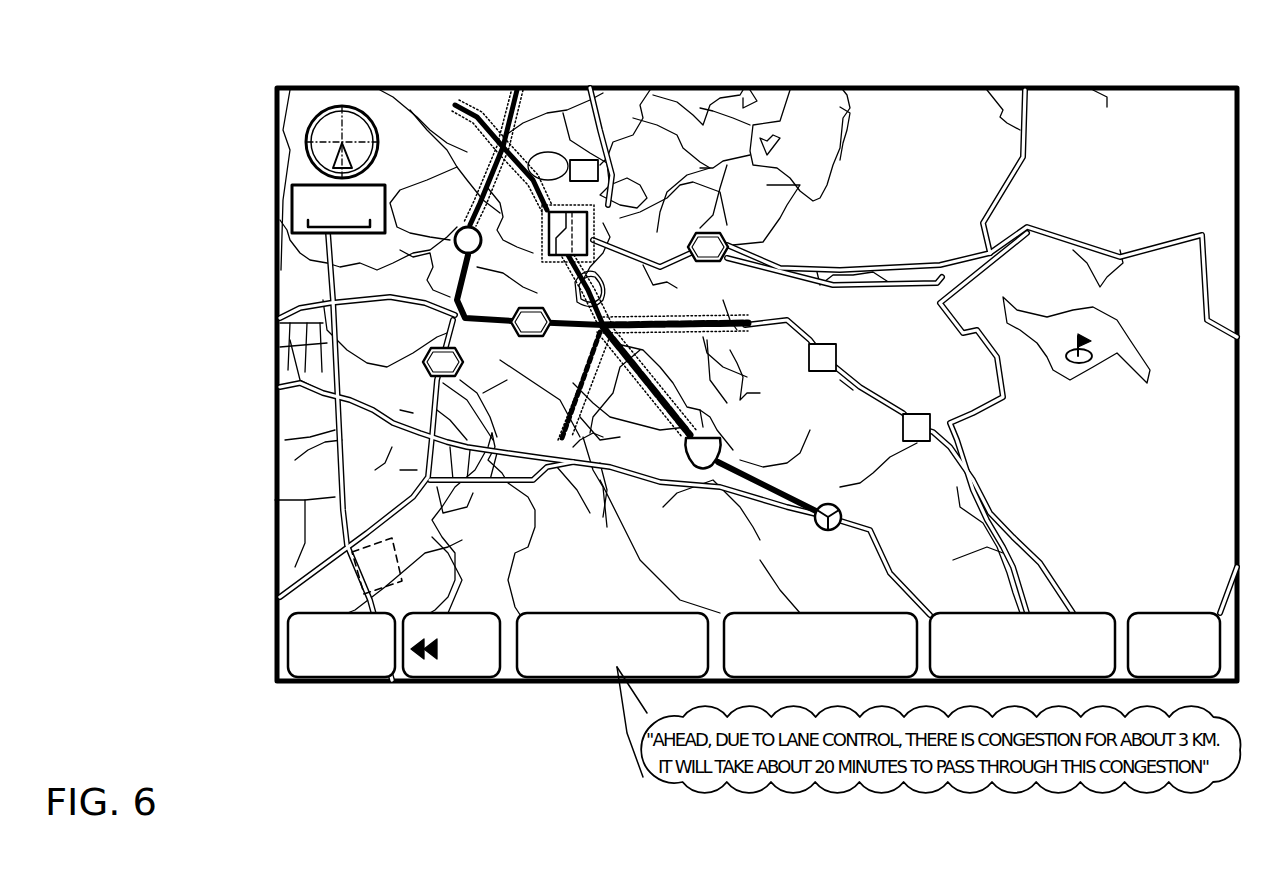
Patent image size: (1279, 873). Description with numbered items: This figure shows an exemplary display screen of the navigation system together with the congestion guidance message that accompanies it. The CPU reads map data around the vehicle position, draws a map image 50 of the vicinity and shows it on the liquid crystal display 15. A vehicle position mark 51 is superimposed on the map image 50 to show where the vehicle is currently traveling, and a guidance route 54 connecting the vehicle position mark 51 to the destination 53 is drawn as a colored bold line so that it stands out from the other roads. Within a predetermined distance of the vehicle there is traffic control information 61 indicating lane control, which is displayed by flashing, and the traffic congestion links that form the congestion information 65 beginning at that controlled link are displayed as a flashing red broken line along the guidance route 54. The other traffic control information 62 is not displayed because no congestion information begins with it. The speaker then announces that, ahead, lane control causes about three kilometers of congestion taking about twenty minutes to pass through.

The liquid crystal display 15 is at (890, 87).
The map image 50 is at (1107, 99).
The vehicle position mark 51 is at (844, 514).
The destination 53 is at (455, 240).
The guidance route 54 is at (413, 272).
The traffic control information 61 is at (600, 212).
The traffic control information 62 is at (350, 557).
The congestion information 65 is at (512, 160).